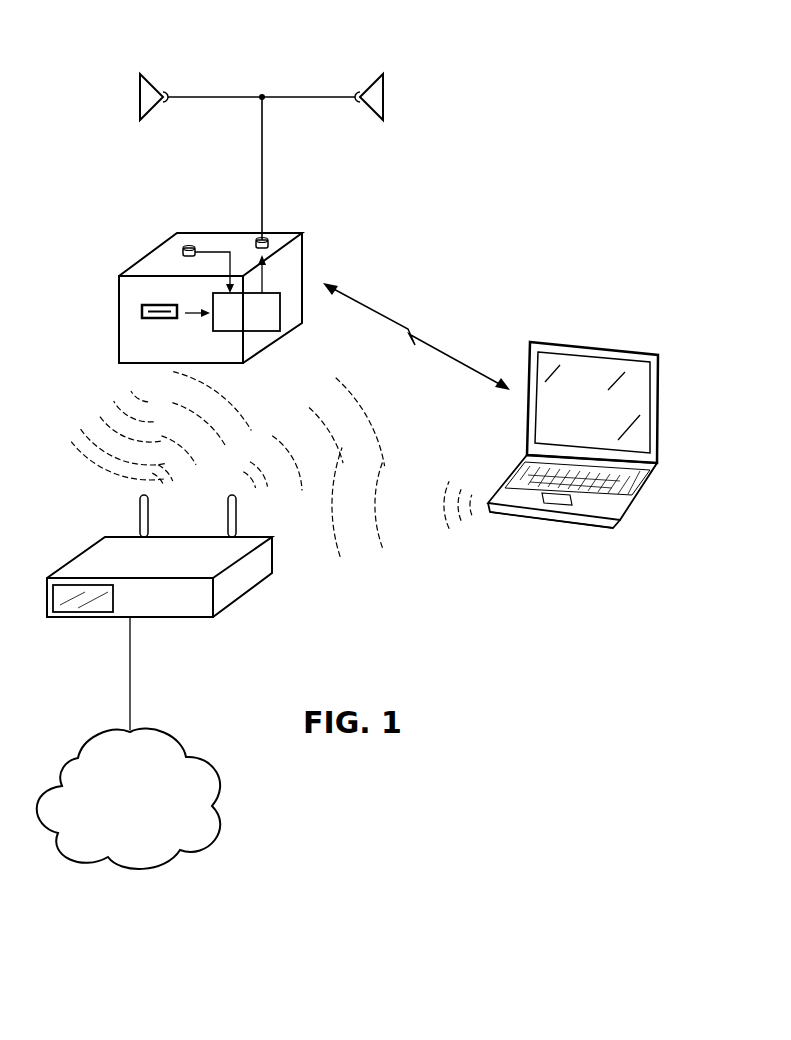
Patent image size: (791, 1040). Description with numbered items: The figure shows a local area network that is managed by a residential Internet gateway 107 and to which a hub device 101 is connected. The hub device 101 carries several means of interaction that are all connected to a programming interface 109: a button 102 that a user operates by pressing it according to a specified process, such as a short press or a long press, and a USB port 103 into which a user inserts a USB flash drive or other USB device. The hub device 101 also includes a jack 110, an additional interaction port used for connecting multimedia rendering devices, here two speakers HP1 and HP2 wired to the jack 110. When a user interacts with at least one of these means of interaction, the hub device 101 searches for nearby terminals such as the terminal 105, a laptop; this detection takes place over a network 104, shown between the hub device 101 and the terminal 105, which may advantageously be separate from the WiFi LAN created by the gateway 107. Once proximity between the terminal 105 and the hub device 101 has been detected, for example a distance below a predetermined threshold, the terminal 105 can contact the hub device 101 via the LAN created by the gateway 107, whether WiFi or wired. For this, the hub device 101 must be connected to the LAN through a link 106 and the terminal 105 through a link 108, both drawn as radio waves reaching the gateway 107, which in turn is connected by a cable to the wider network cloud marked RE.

The speaker HP1 is at (152, 82).
The speaker HP2 is at (371, 82).
The hub device 101 is at (145, 246).
The button 102 is at (191, 240).
The jack 110 is at (270, 234).
The USB port 103 is at (130, 308).
The programming interface 109 is at (262, 332).
The network 104 is at (421, 312).
The terminal 105 is at (595, 372).
The link 106 is at (82, 432).
The gateway 107 is at (97, 642).
The link 108 is at (415, 553).
The network RE is at (128, 799).